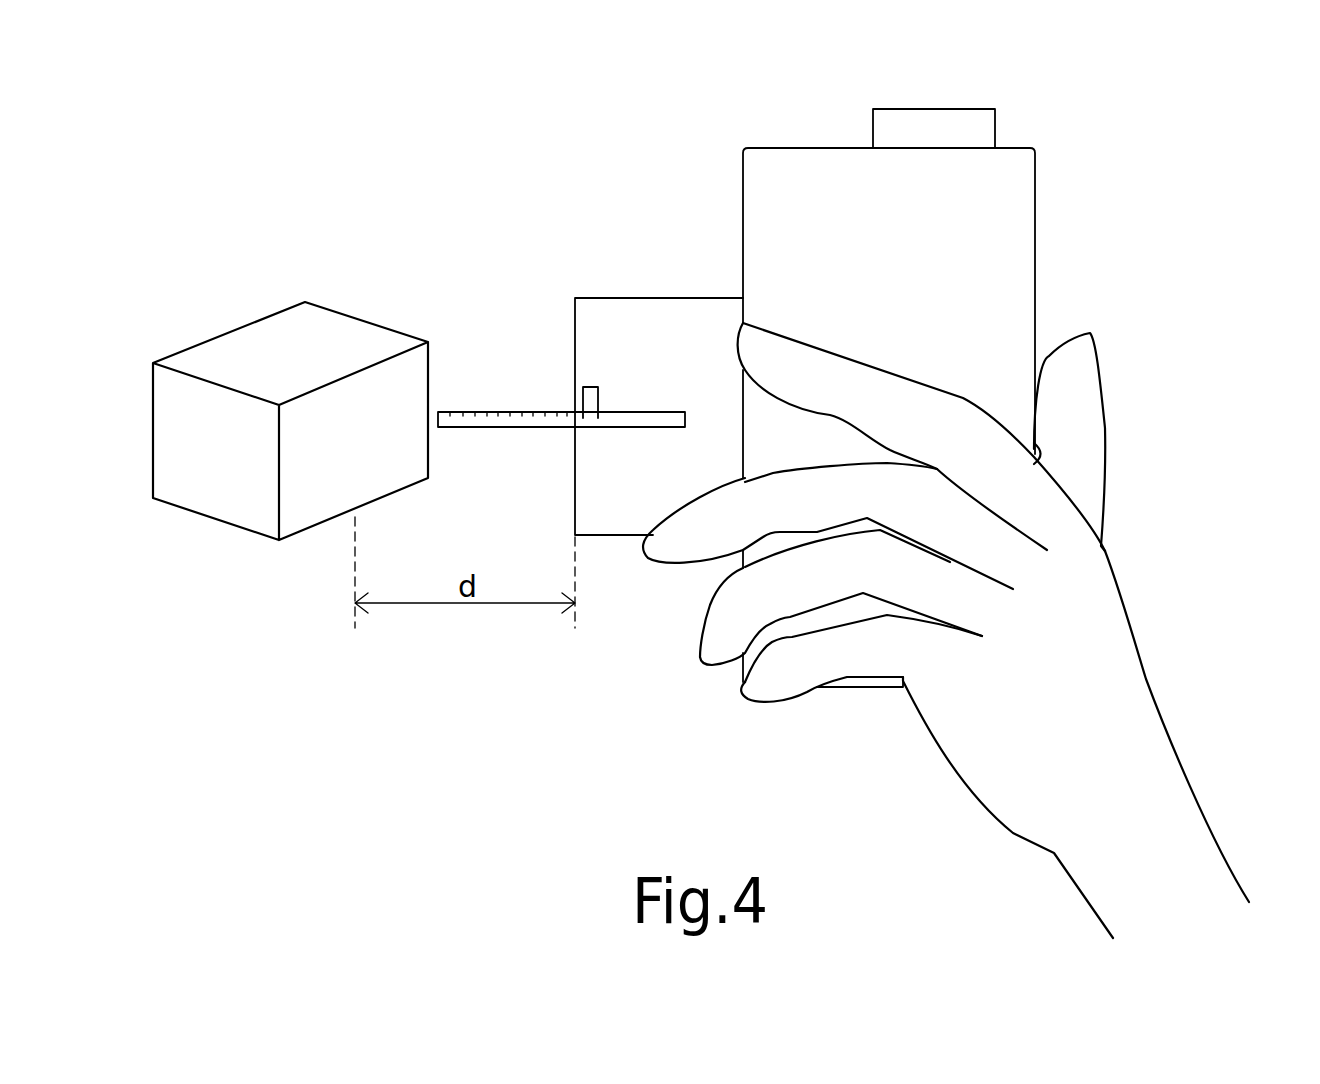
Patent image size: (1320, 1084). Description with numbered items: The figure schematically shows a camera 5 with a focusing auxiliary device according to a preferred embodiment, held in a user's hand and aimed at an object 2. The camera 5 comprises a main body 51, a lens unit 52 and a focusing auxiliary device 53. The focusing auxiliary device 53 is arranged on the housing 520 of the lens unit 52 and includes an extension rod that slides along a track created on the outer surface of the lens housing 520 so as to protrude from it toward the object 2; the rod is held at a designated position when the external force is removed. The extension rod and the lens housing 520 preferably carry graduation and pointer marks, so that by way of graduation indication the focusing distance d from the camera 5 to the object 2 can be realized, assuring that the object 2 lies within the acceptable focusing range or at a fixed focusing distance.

The object 2 is at (322, 338).
The camera 5 is at (1052, 102).
The main body 51 is at (1000, 252).
The lens unit 52 is at (602, 280).
The housing 520 is at (618, 313).
The focusing auxiliary device 53 is at (567, 428).